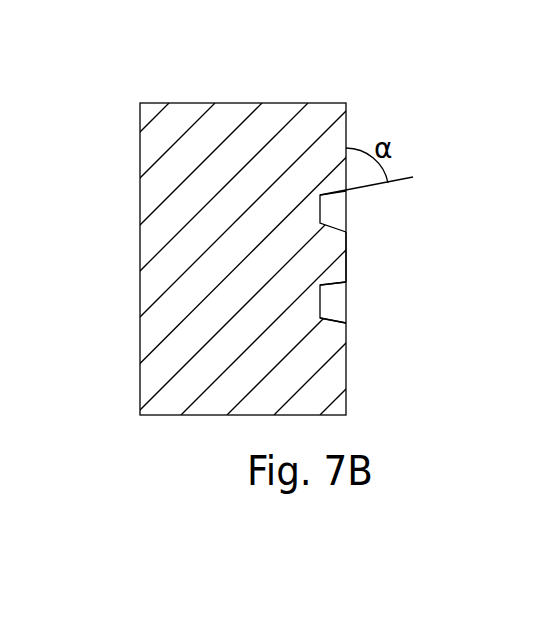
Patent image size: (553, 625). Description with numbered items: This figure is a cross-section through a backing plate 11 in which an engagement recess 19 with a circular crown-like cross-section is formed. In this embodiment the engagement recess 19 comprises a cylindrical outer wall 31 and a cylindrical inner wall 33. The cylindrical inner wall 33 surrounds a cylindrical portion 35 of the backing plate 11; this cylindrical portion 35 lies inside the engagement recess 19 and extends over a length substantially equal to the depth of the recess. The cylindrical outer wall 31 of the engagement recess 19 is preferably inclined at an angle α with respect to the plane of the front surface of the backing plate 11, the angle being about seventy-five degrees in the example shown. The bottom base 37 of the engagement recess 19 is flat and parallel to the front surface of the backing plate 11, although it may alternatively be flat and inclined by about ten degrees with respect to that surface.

The backing plate 11 is at (276, 84).
The engagement recess 19 is at (356, 211).
The cylindrical portion 35 is at (347, 258).
The cylindrical inner wall 33 is at (320, 297).
The bottom base 37 is at (320, 305).
The cylindrical outer wall 31 is at (362, 304).